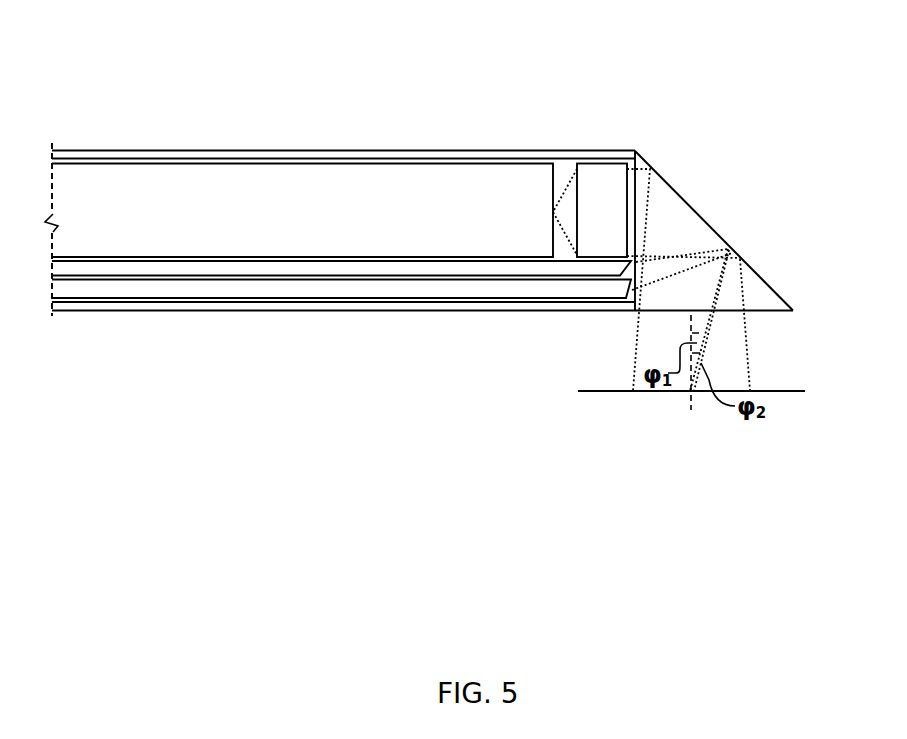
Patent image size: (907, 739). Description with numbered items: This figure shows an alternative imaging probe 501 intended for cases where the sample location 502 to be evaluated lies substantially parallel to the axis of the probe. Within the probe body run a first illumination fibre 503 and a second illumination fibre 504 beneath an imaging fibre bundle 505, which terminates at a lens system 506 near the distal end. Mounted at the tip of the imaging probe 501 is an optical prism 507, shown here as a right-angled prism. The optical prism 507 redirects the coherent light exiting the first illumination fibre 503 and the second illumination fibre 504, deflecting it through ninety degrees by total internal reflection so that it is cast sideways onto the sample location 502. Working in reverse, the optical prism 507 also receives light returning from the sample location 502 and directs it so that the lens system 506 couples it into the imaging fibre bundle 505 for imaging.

The imaging probe 501 is at (765, 63).
The sample location 502 is at (690, 418).
The first illumination fibre 503 is at (130, 290).
The second illumination fibre 504 is at (220, 270).
The imaging fibre bundle 505 is at (273, 168).
The lens system 506 is at (592, 170).
The optical prism 507 is at (765, 285).